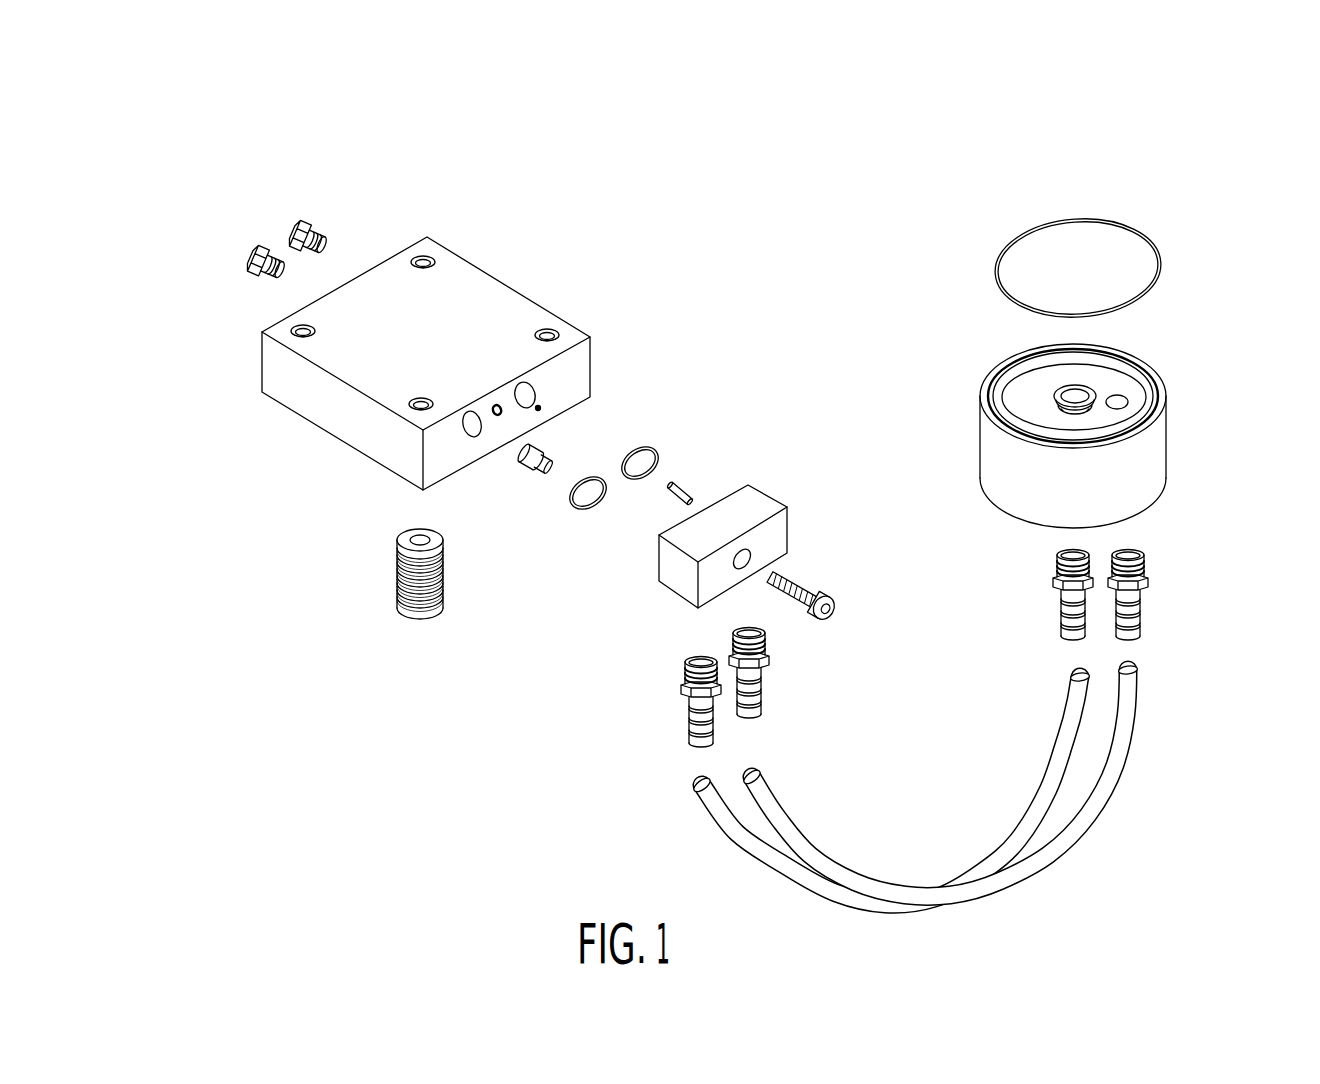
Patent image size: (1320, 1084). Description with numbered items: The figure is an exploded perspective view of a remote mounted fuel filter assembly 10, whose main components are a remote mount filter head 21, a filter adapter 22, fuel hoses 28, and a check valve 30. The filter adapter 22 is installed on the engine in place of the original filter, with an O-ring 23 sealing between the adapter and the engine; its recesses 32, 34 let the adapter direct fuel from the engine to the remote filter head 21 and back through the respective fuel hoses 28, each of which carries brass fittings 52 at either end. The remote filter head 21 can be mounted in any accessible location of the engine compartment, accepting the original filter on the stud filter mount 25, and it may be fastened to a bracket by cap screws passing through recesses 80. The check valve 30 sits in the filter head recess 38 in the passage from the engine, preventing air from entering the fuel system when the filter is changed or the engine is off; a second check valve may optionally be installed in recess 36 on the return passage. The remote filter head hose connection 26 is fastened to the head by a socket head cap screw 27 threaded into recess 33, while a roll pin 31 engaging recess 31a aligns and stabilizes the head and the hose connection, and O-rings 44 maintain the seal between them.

The fuel filter assembly 10 is at (760, 190).
The remote mount filter head 21 is at (513, 288).
The filter adapter 22 is at (982, 443).
The O-ring 23 is at (997, 281).
The stud filter mount 25 is at (398, 612).
The remote filter head hose connection 26 is at (787, 542).
The socket head cap screw 27 is at (846, 605).
The fuel hoses 28 is at (1060, 865).
The check valve 30 is at (528, 474).
The roll pin 31 is at (690, 480).
The recess 31a is at (540, 408).
The recess 32 is at (1080, 392).
The recess 33 is at (495, 408).
The recess 34 is at (1128, 400).
The recess 36 is at (527, 395).
The filter head recess 38 is at (473, 442).
The O-rings 44 is at (624, 485).
The brass fittings 52 is at (1140, 617).
The recesses 80 is at (423, 255).